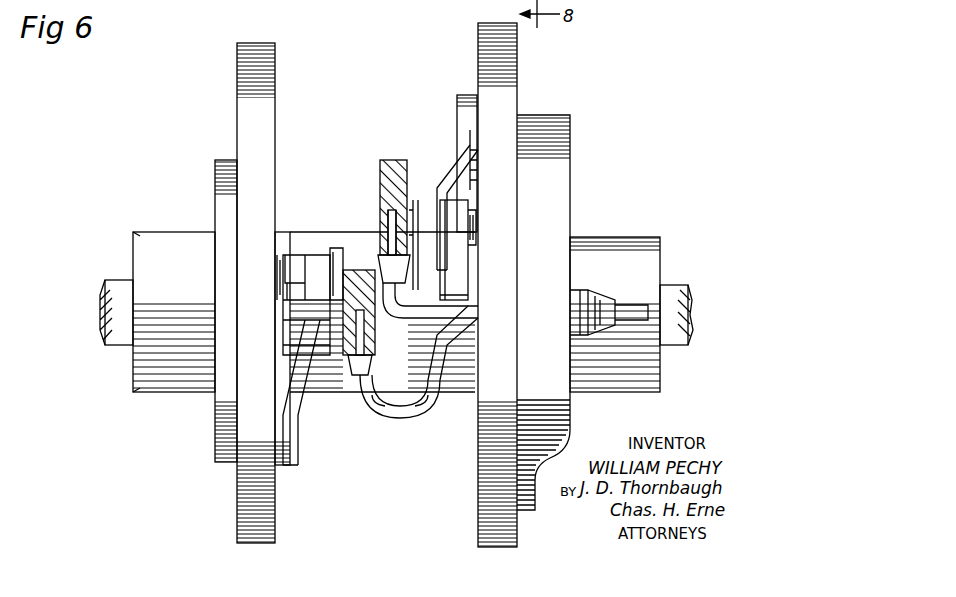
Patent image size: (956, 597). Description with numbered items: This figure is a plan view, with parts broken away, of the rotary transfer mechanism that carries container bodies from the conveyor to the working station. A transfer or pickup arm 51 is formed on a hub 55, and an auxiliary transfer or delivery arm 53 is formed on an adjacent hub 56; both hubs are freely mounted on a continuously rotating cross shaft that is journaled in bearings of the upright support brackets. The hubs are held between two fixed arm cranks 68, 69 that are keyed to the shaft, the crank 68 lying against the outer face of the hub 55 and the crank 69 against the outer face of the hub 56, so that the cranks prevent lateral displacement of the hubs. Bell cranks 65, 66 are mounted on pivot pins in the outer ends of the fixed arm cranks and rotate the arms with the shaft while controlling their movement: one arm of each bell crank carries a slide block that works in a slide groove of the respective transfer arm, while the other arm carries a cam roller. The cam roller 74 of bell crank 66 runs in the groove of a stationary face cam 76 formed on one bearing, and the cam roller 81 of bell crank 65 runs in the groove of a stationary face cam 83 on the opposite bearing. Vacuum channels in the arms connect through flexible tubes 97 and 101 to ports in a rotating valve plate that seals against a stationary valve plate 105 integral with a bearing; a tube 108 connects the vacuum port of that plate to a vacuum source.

The transfer arm 51 is at (393, 160).
The auxiliary transfer arm 53 is at (360, 268).
The hub 55 is at (393, 413).
The hub 56 is at (341, 246).
The bell crank 65 is at (457, 165).
The bell crank 66 is at (300, 402).
The fixed arm crank 68 is at (463, 268).
The fixed arm crank 69 is at (300, 292).
The cam roller 74 is at (285, 466).
The stationary face cam 76 is at (240, 115).
The cam roller 81 is at (472, 92).
The stationary face cam 83 is at (505, 91).
The flexible tube 97 is at (428, 312).
The flexible tube 101 is at (428, 404).
The stationary valve plate 105 is at (560, 186).
The tube 108 is at (630, 308).